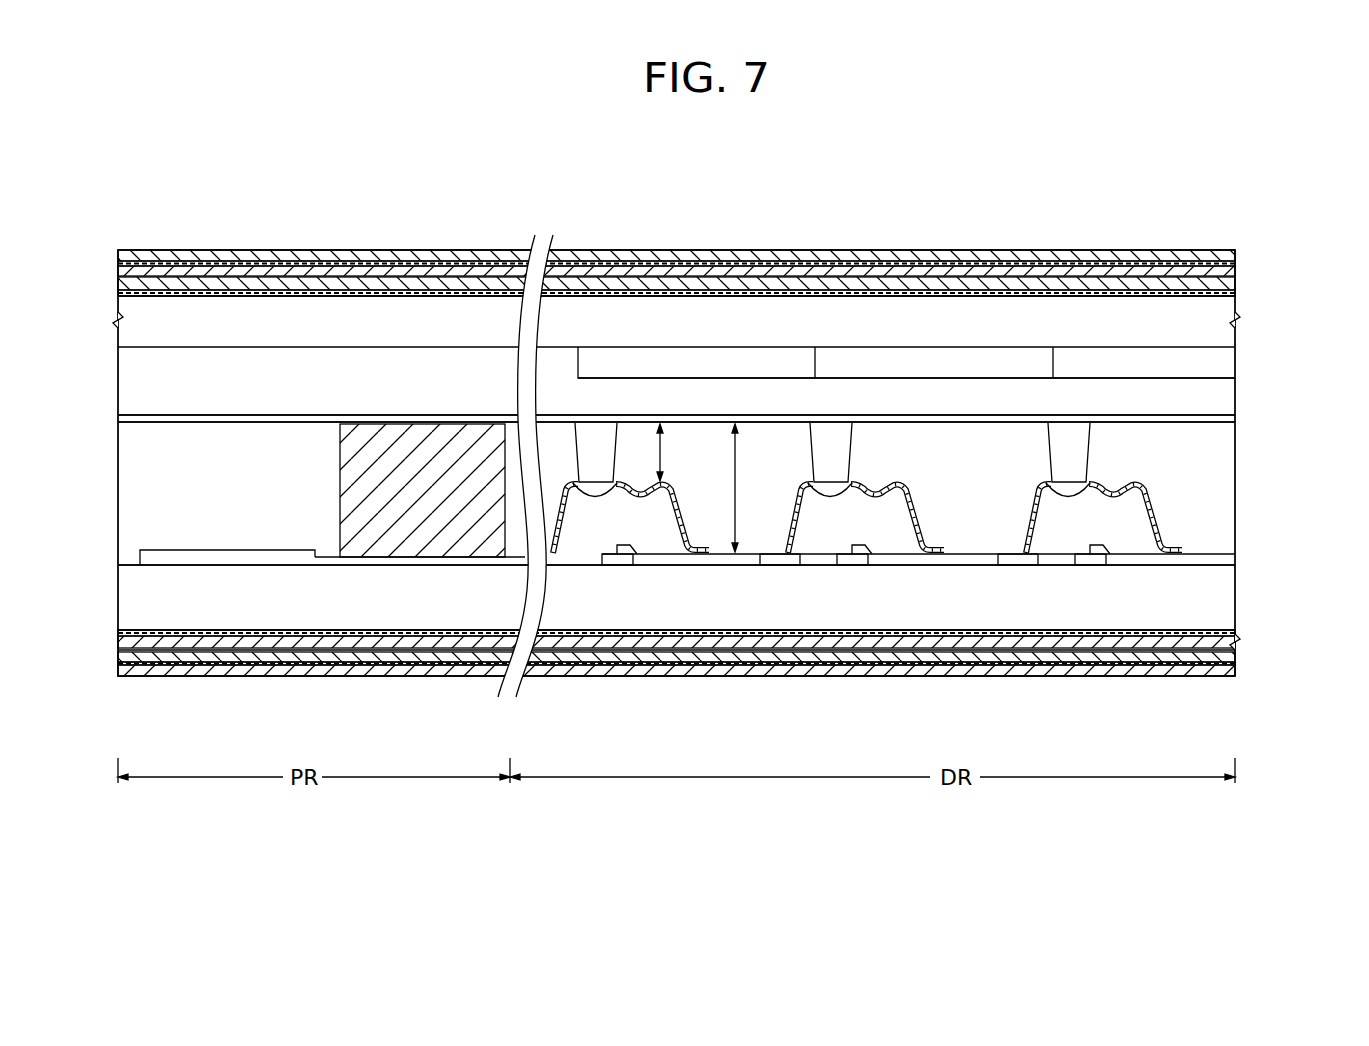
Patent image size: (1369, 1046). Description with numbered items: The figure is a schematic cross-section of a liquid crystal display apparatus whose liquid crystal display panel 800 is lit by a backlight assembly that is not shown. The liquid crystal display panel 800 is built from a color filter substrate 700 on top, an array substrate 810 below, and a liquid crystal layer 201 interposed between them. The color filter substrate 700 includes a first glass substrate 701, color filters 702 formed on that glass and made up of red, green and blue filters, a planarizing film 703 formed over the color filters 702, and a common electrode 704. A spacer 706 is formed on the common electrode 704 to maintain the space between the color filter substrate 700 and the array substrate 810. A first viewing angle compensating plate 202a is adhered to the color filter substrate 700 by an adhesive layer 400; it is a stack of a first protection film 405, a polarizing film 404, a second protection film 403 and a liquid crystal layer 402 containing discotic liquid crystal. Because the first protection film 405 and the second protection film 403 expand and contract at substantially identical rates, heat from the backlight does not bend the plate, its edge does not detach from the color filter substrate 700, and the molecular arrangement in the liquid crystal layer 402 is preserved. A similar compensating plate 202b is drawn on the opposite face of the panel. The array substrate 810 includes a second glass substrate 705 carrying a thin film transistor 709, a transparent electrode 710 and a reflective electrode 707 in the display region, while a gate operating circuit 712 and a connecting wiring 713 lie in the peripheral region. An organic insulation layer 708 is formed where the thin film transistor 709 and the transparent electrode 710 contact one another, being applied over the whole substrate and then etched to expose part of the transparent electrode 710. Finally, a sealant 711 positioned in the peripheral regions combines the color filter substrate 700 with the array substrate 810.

The liquid crystal display panel 800 is at (1203, 234).
The first viewing angle compensating plate 202a is at (1252, 250).
The lower polarizing plate 202b is at (1252, 630).
The adhesive layer 400 is at (118, 296).
The liquid crystal layer 402 is at (118, 284).
The second protection film 403 is at (118, 273).
The polarizing film 404 is at (118, 263).
The first protection film 405 is at (118, 253).
The color filter substrate 700 is at (738, 359).
The first glass substrate 701 is at (1235, 337).
The color filters 702 is at (1235, 364).
The planarizing film 703 is at (1235, 393).
The common electrode 704 is at (711, 409).
The liquid crystal layer 201 is at (1235, 475).
The array substrate 810 is at (738, 581).
The second glass substrate 705 is at (1235, 588).
The spacer 706 is at (845, 447).
The reflective electrode 707 is at (918, 505).
The organic insulation layer 708 is at (905, 527).
The thin film transistor 709 is at (855, 566).
The transparent electrode 710 is at (913, 566).
The sealant 711 is at (340, 490).
The gate operating circuit 712 is at (215, 550).
The connecting wiring 713 is at (386, 558).